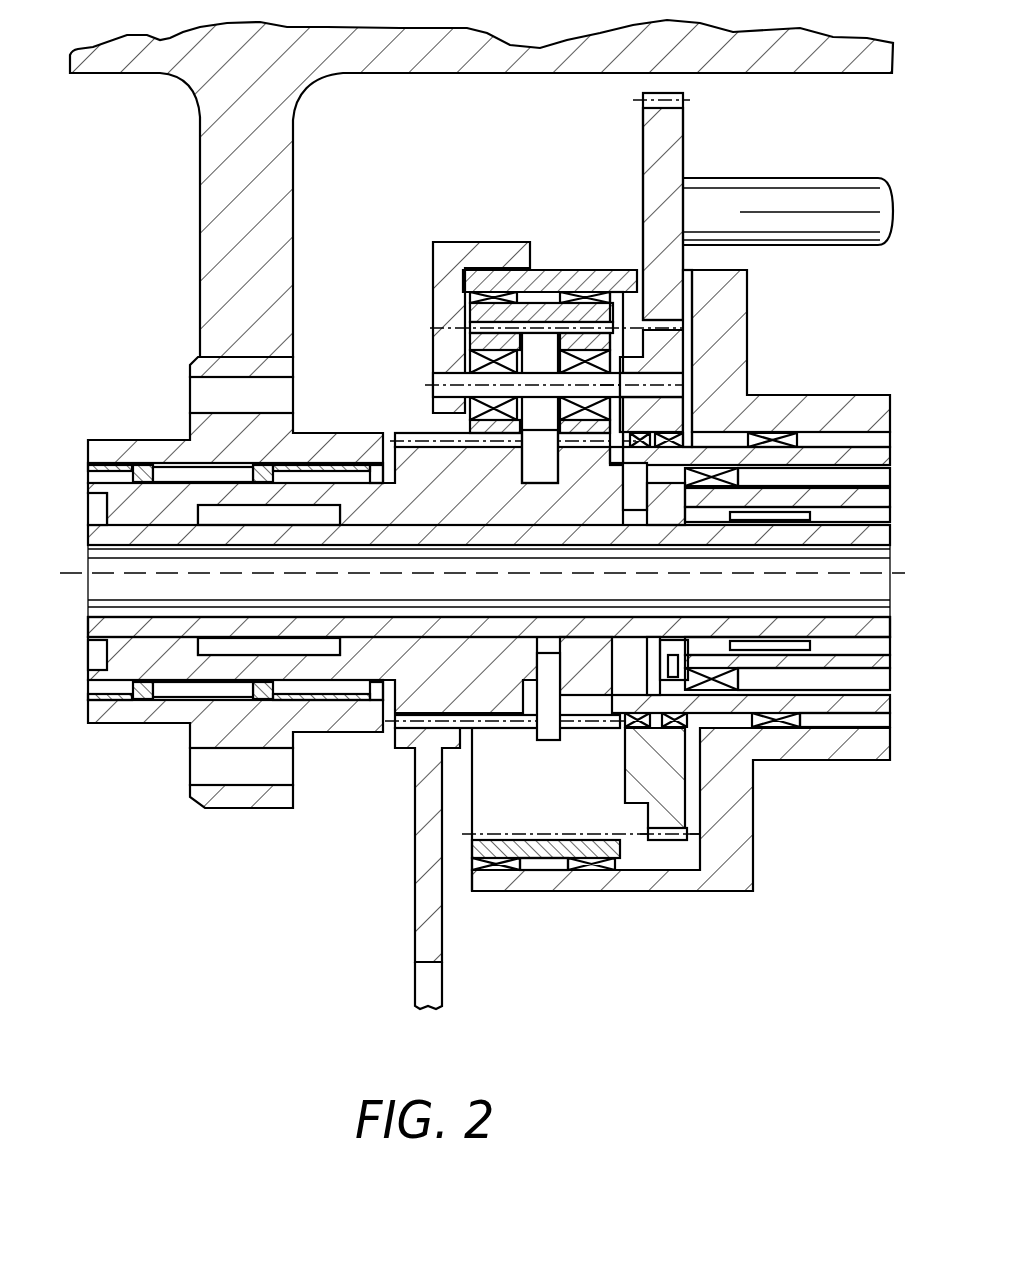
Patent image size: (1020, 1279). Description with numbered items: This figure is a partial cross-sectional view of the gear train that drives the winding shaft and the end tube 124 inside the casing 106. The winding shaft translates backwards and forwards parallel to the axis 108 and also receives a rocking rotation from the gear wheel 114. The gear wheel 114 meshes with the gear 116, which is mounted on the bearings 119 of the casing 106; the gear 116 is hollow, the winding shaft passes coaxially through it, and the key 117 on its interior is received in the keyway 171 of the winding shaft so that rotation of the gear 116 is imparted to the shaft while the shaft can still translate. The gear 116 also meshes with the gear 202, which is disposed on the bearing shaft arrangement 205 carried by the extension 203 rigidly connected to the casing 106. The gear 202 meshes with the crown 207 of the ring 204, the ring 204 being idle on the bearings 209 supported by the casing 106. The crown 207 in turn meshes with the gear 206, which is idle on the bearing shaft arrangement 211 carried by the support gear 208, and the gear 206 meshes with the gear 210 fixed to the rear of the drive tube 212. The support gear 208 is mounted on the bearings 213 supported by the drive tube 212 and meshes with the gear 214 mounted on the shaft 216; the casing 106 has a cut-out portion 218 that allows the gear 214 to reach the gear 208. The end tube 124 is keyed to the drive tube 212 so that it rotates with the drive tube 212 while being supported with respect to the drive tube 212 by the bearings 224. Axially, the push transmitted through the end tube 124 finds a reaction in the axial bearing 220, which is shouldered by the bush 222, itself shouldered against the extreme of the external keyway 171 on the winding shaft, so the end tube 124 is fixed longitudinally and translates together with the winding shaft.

The casing 106 is at (737, 318).
The axis 108 is at (76, 572).
The gear wheel 114 is at (428, 906).
The gear 116 is at (402, 440).
The key 117 is at (203, 520).
The bearings 119 is at (277, 473).
The end tube 124 is at (860, 665).
The keyway 171 is at (300, 527).
The gear 202 is at (480, 345).
The extension 203 is at (476, 252).
The ring 204 is at (547, 300).
The bearing shaft arrangement 205 is at (419, 369).
The gear 206 is at (572, 335).
The crown 207 is at (628, 340).
The support gear 208 is at (673, 350).
The bearings 209 is at (575, 916).
The gear 210 is at (570, 697).
The bearing shaft arrangement 211 is at (551, 436).
The drive tube 212 is at (830, 713).
The bearings 213 is at (620, 723).
The gear 214 is at (652, 133).
The shaft 216 is at (760, 190).
The cut-out portion 218 is at (685, 272).
The axial bearing 220 is at (652, 642).
The bush 222 is at (410, 640).
The bearings 224 is at (890, 472).